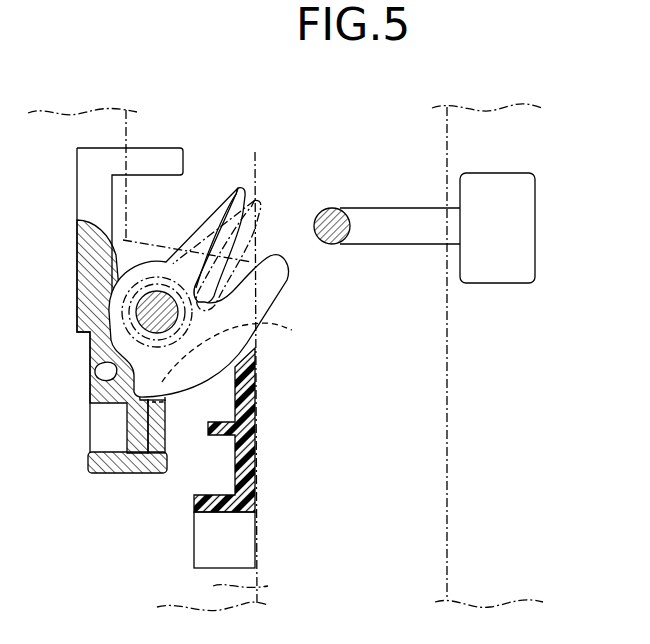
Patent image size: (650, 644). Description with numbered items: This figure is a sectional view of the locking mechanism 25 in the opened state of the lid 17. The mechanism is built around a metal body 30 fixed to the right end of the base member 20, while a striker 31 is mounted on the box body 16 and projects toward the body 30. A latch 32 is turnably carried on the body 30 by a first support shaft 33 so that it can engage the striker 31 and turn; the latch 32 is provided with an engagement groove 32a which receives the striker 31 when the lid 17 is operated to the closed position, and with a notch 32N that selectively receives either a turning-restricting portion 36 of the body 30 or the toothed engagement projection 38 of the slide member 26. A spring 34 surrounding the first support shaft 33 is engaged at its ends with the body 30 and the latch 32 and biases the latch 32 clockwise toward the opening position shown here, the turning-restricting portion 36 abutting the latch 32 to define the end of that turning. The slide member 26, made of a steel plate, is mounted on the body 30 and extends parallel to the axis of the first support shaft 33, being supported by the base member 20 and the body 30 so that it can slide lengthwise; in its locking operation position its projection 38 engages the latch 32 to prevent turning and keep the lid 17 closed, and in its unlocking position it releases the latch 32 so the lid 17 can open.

The box body 16 is at (508, 140).
The lid 17 is at (247, 561).
The base member 20 is at (257, 447).
The locking mechanism 25 is at (207, 391).
The slide member 26 is at (152, 450).
The body 30 is at (77, 300).
The striker 31 is at (333, 208).
The latch 32 is at (276, 292).
The engagement groove 32a is at (255, 263).
The notch 32N is at (137, 401).
The first support shaft 33 is at (157, 300).
The spring 34 is at (251, 365).
The turning-restricting portion 36 is at (100, 372).
The engagement projection 38 is at (243, 351).